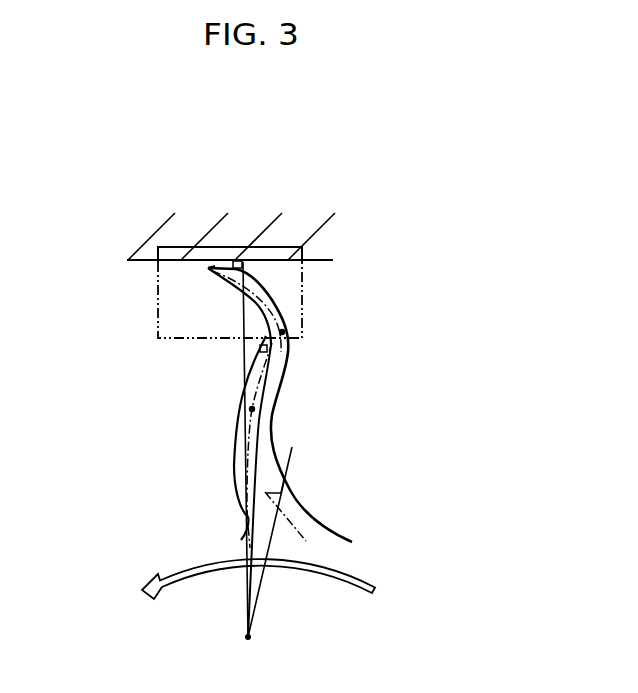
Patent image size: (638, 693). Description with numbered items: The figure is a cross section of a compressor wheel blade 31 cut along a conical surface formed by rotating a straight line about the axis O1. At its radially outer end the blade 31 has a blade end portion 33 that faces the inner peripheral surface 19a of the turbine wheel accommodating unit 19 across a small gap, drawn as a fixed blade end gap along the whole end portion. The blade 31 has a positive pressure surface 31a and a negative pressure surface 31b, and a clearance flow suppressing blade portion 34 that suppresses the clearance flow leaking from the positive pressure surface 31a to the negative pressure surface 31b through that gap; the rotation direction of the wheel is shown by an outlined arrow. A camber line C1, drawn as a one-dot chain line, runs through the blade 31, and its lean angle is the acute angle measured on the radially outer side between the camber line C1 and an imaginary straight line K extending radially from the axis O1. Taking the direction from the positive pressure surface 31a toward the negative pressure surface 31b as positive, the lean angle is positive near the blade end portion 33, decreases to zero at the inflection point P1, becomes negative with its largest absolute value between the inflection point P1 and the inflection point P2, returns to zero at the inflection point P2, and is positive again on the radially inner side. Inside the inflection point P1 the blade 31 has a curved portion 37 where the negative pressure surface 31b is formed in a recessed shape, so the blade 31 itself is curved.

The turbine wheel accommodating unit 19 is at (190, 226).
The inner peripheral surface 19a is at (322, 261).
The clearance flow suppressing blade portion 34 is at (120, 342).
The blade 31 is at (311, 397).
The positive pressure surface 31a is at (243, 383).
The negative pressure surface 31b is at (297, 349).
The blade end portion 33 is at (210, 266).
The curved portion 37 is at (269, 428).
The imaginary straight line K is at (243, 309).
The axis O1 is at (252, 636).
The inflection point P1 is at (284, 331).
The inflection point P2 is at (251, 409).
The camber line C1 is at (288, 523).